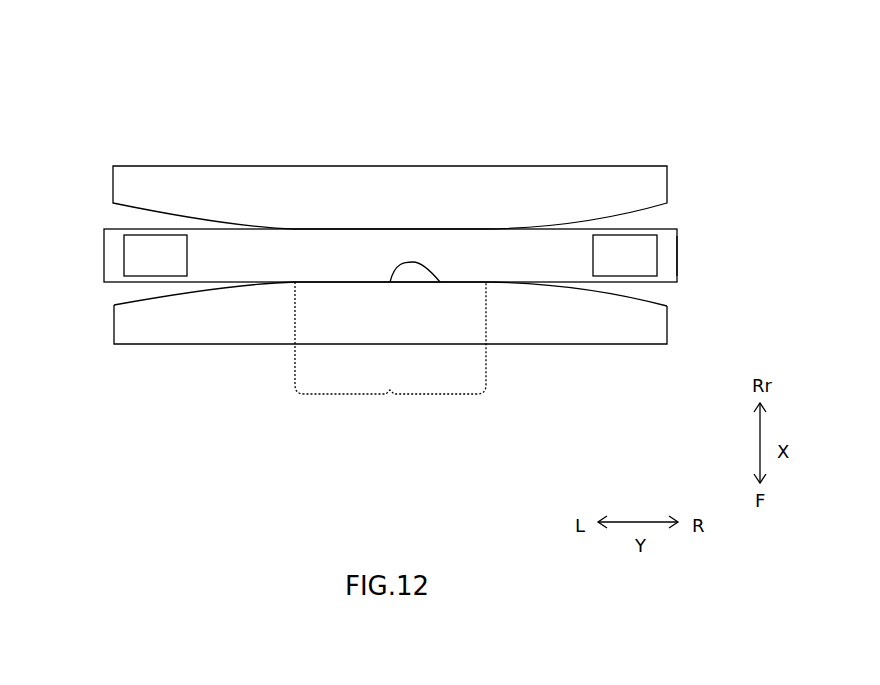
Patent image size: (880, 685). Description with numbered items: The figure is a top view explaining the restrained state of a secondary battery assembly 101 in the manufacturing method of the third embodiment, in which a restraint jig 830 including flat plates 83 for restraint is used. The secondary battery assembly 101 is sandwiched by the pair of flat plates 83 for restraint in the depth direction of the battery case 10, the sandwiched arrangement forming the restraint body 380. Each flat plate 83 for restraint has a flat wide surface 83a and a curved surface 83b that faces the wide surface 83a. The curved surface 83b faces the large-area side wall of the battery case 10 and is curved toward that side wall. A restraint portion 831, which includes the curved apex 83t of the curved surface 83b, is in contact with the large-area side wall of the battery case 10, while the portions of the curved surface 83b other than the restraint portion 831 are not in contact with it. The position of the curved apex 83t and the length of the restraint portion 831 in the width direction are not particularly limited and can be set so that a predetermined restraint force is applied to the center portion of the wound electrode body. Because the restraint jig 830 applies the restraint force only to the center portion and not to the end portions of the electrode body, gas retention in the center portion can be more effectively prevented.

The restraint body 380 is at (113, 71).
The flat plate for restraint 83 is at (117, 183).
The restraint jig 830 is at (374, 289).
The wide surface 83a is at (152, 344).
The curved surface 83b is at (643, 293).
The curved apex 83t is at (440, 282).
The restraint portion 831 is at (390, 356).
The battery case 10 is at (677, 265).
The secondary battery assembly 101 is at (686, 245).